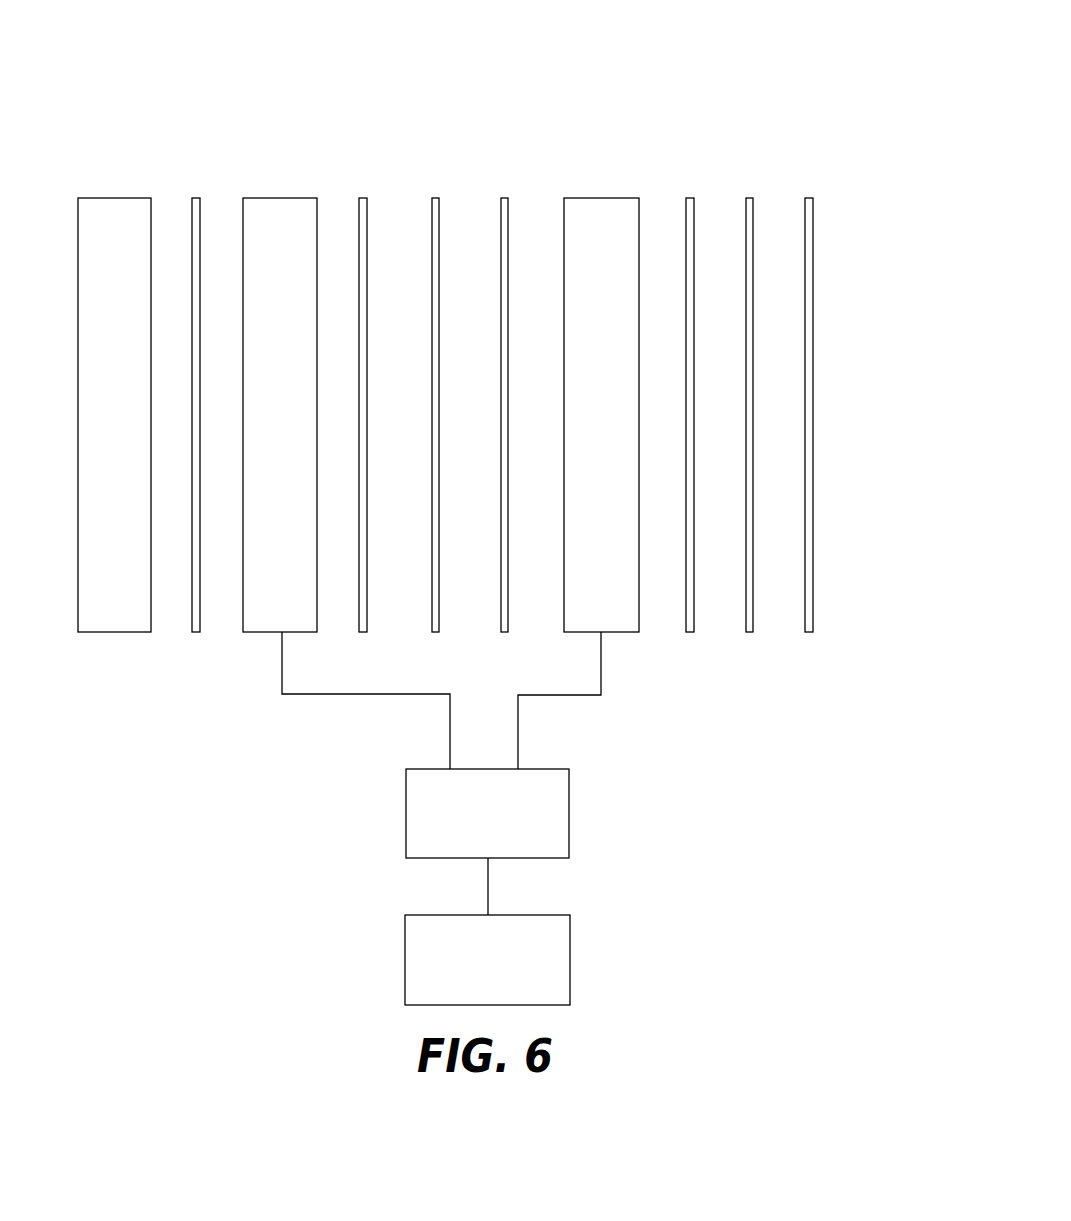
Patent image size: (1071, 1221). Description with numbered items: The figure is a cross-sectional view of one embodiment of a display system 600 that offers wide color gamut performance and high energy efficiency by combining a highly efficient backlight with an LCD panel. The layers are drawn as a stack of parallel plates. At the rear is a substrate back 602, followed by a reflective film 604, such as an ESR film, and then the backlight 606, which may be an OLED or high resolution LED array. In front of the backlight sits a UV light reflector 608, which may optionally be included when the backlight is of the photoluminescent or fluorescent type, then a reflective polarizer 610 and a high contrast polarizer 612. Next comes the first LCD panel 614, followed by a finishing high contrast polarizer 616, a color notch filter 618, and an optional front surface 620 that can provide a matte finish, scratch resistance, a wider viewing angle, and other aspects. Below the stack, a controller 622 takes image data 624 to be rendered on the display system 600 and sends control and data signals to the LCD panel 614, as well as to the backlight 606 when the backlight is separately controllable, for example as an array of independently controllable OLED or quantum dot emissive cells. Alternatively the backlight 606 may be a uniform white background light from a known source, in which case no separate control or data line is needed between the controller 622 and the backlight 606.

The display system 600 is at (653, 67).
The substrate back 602 is at (108, 198).
The reflective film 604 is at (200, 198).
The backlight 606 is at (273, 198).
The UV light reflector 608 is at (365, 198).
The reflective polarizer 610 is at (435, 198).
The high contrast polarizer 612 is at (504, 198).
The first LCD panel 614 is at (586, 198).
The finishing high contrast polarizer 616 is at (691, 198).
The color notch filter 618 is at (750, 198).
The front surface 620 is at (808, 198).
The controller 622 is at (569, 793).
The image data 624 is at (570, 938).